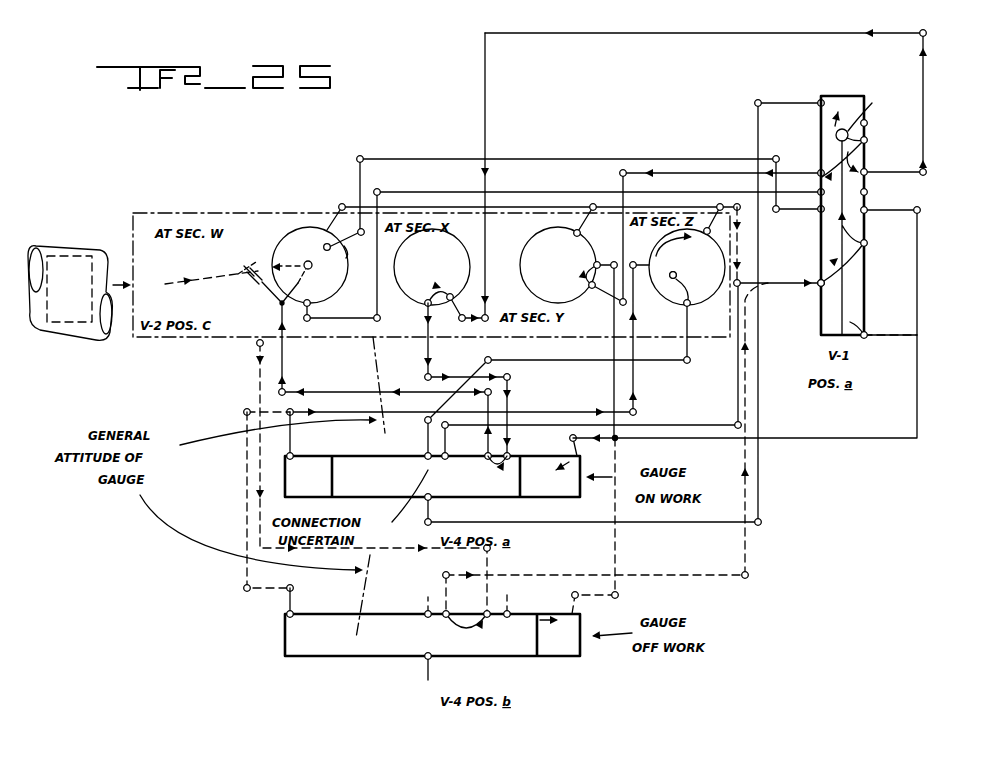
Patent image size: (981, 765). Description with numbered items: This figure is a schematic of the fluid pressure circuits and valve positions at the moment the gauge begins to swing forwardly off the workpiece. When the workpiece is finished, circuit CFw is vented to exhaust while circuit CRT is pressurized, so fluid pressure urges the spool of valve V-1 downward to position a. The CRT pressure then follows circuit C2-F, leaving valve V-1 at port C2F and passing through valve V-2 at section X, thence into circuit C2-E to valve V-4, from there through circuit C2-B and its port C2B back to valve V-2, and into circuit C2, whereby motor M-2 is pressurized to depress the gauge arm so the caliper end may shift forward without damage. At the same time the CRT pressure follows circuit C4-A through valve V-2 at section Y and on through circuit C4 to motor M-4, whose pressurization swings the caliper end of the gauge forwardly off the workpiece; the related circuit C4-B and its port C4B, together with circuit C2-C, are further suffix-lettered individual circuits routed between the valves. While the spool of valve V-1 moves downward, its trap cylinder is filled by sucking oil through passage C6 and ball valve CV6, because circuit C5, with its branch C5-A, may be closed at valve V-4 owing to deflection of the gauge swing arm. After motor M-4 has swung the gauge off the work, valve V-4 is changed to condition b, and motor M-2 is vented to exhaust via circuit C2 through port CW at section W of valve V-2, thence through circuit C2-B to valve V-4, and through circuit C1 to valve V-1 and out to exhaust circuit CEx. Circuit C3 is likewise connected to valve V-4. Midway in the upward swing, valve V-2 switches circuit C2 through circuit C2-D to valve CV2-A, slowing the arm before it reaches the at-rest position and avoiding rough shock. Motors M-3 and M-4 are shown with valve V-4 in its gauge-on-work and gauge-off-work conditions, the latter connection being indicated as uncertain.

The motor M-2 is at (71, 291).
The motor M-3 is at (411, 550).
The motor M-4 is at (550, 550).
The valve V-1 is at (842, 229).
The valve V-2 is at (431, 275).
The valve V-4 is at (432, 582).
The circuit C1 is at (575, 403).
The circuit C2 is at (219, 271).
The circuit C2-B is at (279, 445).
The circuit C2-C is at (564, 251).
The circuit C2-D is at (237, 265).
The circuit C2-E is at (476, 458).
The circuit C2-F is at (458, 308).
The circuit C2B is at (486, 524).
The circuit C2F is at (866, 179).
The circuit C3 is at (446, 430).
The circuit C4 is at (745, 409).
The circuit C4-A is at (698, 235).
The circuit C4-B is at (798, 218).
The circuit C4B is at (348, 214).
The circuit C5 is at (618, 388).
The circuit C5-A is at (534, 458).
The passage C6 is at (836, 238).
The ball valve CV6 is at (857, 111).
The valve CV2-A is at (243, 286).
The circuit CW is at (321, 269).
The exhaust circuit CEx is at (620, 230).
The circuit CRT is at (874, 141).
The circuit CFw is at (874, 340).